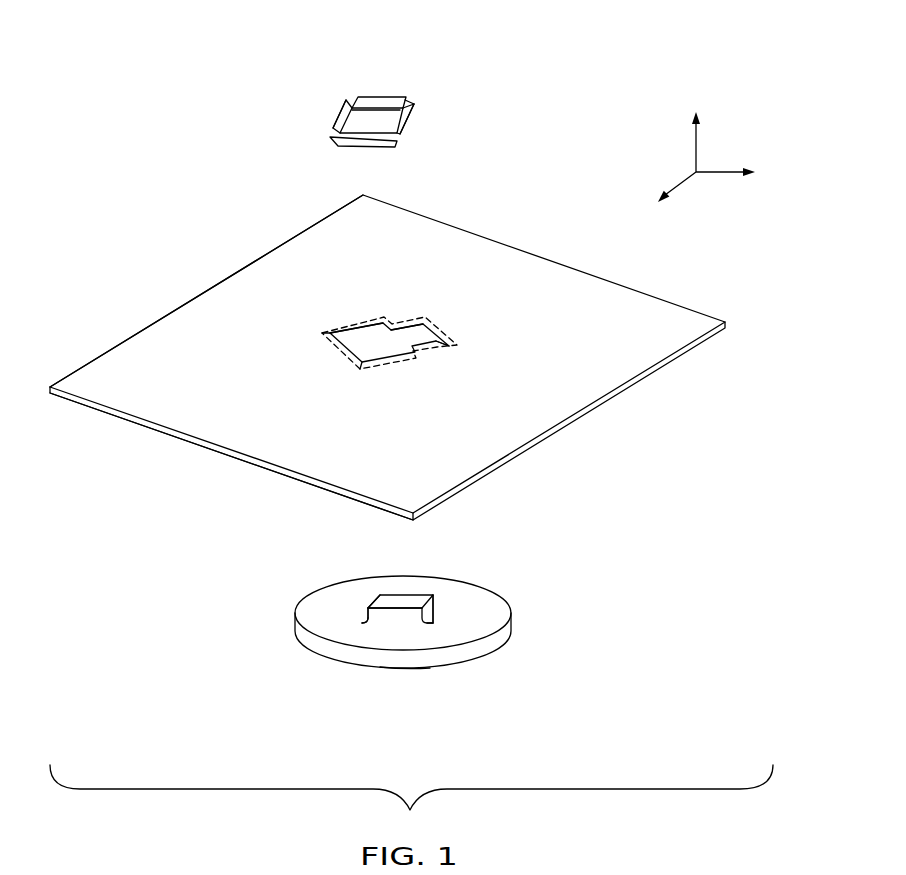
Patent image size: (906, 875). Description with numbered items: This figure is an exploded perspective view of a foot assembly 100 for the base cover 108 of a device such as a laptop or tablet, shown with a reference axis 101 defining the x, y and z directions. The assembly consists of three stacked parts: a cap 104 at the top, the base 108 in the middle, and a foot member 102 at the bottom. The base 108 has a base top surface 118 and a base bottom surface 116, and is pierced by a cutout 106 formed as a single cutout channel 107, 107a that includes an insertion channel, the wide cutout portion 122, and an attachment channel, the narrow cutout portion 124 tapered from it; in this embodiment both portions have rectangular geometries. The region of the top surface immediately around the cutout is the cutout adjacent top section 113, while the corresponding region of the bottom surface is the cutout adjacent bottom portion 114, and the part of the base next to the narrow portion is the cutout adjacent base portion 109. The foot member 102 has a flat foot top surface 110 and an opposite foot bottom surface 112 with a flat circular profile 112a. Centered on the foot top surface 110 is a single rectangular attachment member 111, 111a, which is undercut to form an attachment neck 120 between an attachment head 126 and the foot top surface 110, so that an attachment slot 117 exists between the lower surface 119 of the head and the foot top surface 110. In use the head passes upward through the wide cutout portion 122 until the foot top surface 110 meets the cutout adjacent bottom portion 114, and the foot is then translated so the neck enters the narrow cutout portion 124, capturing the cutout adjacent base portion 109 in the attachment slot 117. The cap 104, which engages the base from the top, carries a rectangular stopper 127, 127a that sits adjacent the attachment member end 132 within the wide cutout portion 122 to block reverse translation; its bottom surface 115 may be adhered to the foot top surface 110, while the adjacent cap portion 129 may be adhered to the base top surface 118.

The foot assembly 100 is at (596, 88).
The axis 101 is at (696, 152).
The foot member 102 is at (500, 615).
The cap 104 is at (402, 102).
The cutout 106 is at (372, 337).
The cutout channel 107 is at (391, 367).
The single cutout channel 107a is at (405, 358).
The base cover 108 is at (505, 263).
The cutout adjacent base portion 109 is at (423, 320).
The foot top surface 110 is at (487, 626).
The attachment member 111 is at (416, 574).
The single attachment member 111a is at (402, 607).
The foot bottom surface 112 is at (432, 697).
The flat circular profile 112a is at (430, 668).
The cutout adjacent top section 113 is at (322, 333).
The cutout adjacent bottom portion 114 is at (360, 367).
The bottom surface of the stopper 115 is at (407, 118).
The base bottom surface 116 is at (252, 480).
The attachment slot 117 is at (362, 623).
The base top surface 118 is at (218, 297).
The lower surface of the attachment head 119 is at (438, 618).
The attachment neck 120 is at (430, 622).
The wide cutout portion 122 is at (347, 333).
The narrow cutout portion 124 is at (450, 342).
The attachment head 126 is at (370, 607).
The stopper 127 is at (359, 92).
The stopper 127a is at (365, 123).
The cap portion 129 is at (332, 122).
The attachment member end 132 is at (383, 600).